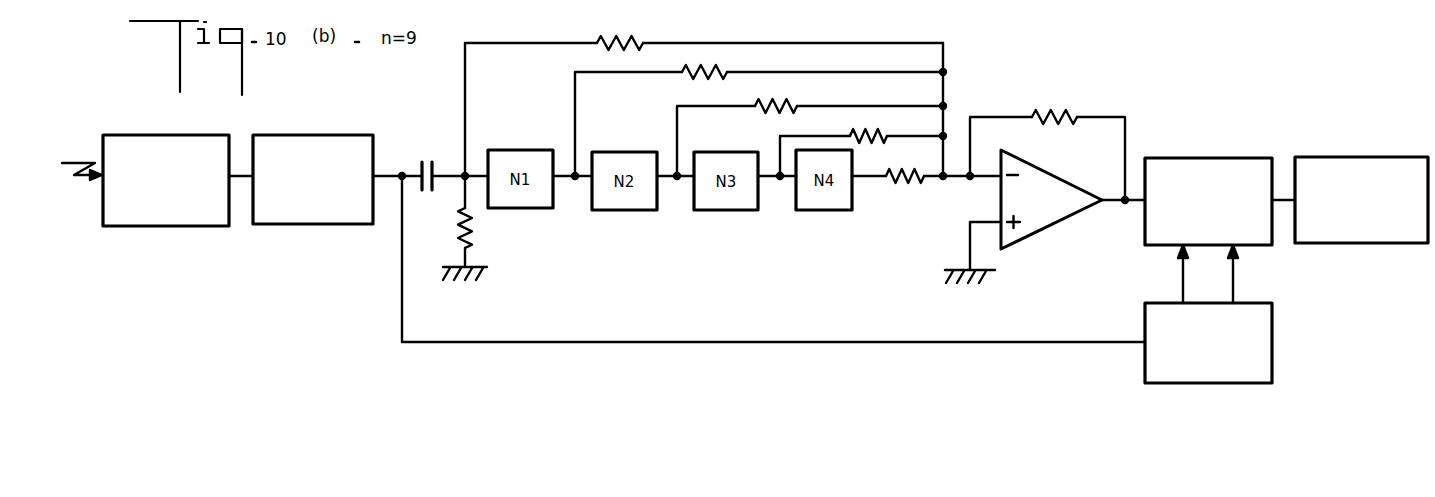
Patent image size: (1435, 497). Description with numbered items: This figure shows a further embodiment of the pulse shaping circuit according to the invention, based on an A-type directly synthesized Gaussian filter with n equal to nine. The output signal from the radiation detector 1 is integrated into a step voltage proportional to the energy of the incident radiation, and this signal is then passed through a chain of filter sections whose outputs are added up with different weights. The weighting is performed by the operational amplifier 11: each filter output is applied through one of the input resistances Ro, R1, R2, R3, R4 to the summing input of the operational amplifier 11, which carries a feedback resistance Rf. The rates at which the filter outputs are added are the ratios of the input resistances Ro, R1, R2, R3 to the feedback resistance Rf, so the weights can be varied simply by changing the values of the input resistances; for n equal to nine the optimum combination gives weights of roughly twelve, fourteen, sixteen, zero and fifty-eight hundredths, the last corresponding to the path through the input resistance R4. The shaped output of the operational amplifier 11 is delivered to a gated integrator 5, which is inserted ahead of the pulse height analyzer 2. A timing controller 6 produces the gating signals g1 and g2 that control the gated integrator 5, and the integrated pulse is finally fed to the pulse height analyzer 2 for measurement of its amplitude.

The radiation detector 1 is at (176, 134).
The pulse height analyzer 2 is at (322, 134).
The gated integrator 5 is at (1237, 158).
The timing controller 6 is at (1272, 322).
The operational amplifier 11 is at (1032, 228).
The input resistance Ro is at (608, 36).
The input resistance R1 is at (688, 75).
The input resistance R2 is at (758, 109).
The input resistance R3 is at (886, 139).
The input resistance R4 is at (922, 182).
The feedback resistance Rf is at (1047, 138).
The gating signal g1 is at (1178, 272).
The gating signal g2 is at (1238, 278).